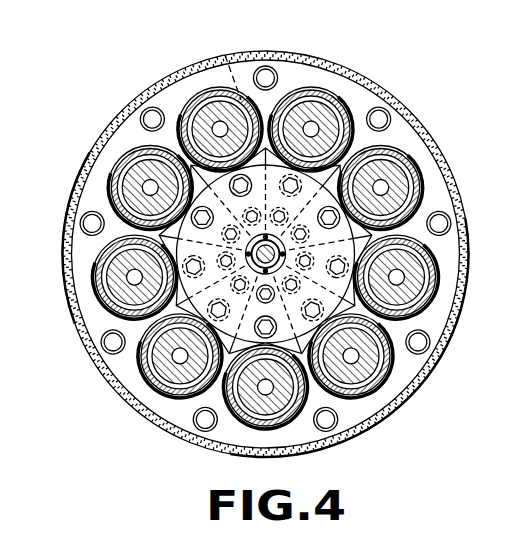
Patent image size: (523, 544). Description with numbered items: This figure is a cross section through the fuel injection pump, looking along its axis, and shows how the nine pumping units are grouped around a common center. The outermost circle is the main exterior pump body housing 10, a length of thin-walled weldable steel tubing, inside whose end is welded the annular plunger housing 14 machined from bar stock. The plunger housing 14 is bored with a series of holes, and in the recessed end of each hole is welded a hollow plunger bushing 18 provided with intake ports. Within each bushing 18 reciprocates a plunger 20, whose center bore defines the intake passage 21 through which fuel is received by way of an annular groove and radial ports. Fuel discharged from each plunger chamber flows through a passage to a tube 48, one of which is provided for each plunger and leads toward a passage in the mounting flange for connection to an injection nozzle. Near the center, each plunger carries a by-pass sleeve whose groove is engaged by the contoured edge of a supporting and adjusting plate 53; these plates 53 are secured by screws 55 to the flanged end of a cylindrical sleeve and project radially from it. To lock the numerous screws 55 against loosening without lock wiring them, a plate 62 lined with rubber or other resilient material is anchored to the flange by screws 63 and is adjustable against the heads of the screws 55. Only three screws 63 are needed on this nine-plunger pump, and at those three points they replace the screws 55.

The main exterior pump body housing 10 is at (432, 137).
The plunger housing 14 is at (432, 192).
The plunger bushing 18 is at (431, 300).
The plunger 20 is at (458, 268).
The intake passage 21 is at (364, 365).
The tube 48 is at (278, 63).
The supporting and adjusting plate 53 is at (159, 234).
The screw 55 is at (215, 63).
The plate 62 is at (354, 247).
The screw 63 is at (380, 150).